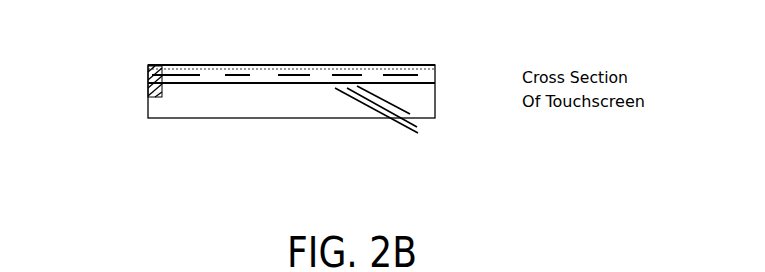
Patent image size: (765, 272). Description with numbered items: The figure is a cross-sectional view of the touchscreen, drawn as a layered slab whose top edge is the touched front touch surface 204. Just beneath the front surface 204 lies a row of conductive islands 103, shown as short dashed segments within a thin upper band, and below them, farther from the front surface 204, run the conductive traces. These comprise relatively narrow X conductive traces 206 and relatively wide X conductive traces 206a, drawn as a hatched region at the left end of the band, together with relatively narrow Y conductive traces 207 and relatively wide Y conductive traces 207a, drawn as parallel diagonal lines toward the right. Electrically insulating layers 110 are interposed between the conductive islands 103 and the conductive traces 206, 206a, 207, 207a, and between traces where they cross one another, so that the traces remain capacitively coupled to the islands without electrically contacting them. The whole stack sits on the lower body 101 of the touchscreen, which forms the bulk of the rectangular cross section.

The substrate 101 is at (213, 110).
The conductive island 103 is at (178, 77).
The electrically insulating layer 110 is at (193, 72).
The front surface 204 is at (258, 68).
The relatively narrow X conductive trace 206 is at (172, 72).
The relatively wide X conductive trace 206a is at (112, 121).
The relatively narrow Y conductive trace 207 is at (428, 150).
The relatively wide Y conductive trace 207a is at (410, 127).